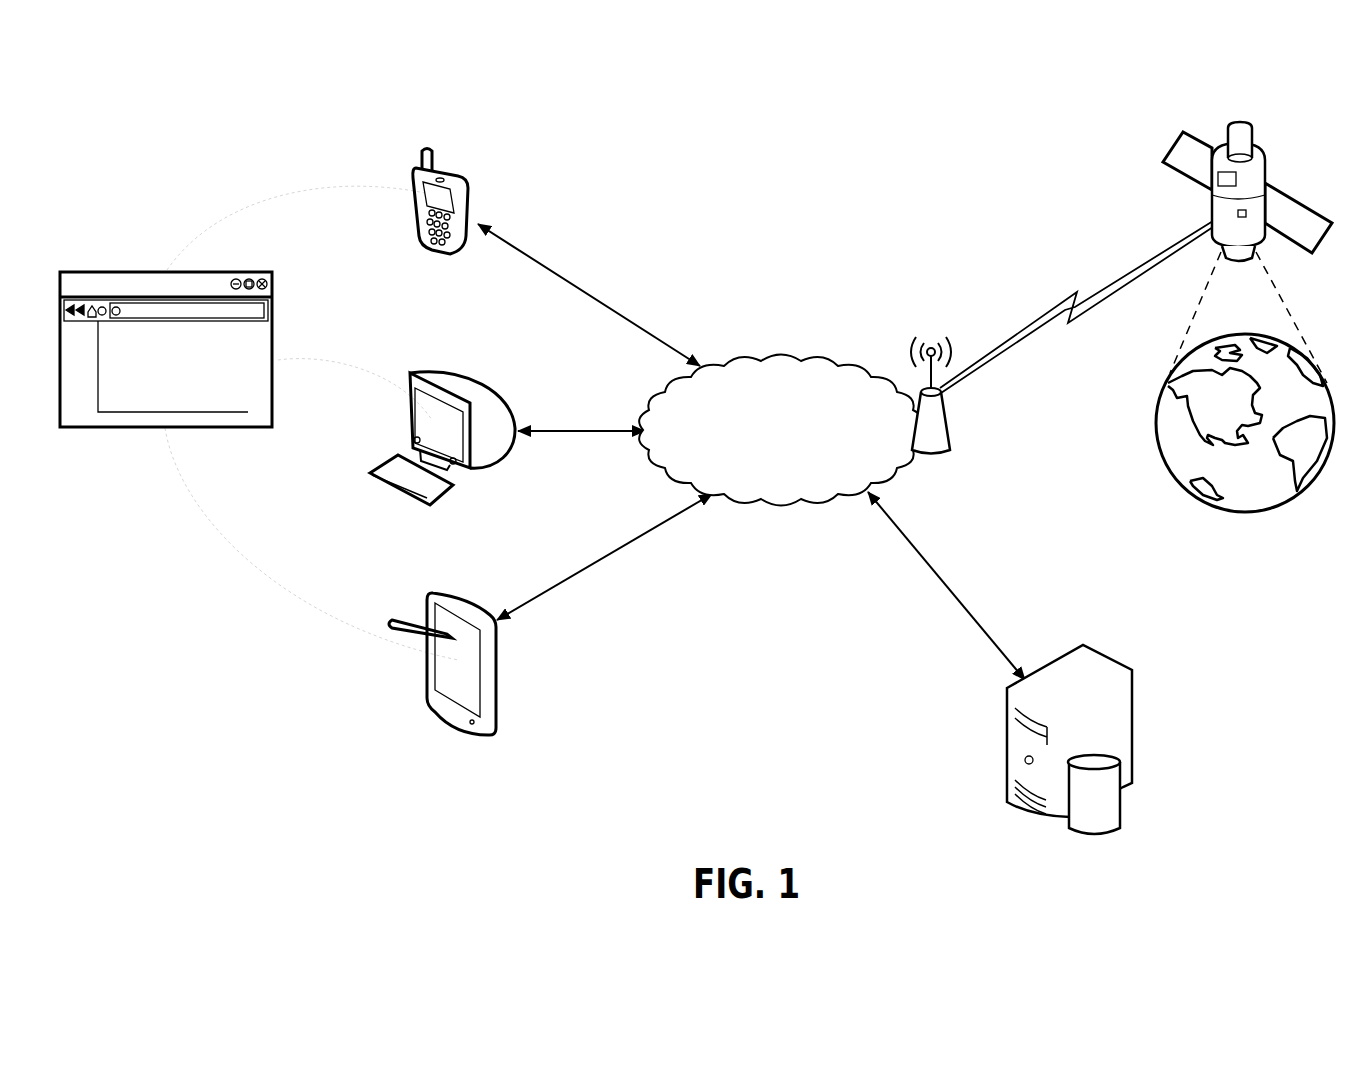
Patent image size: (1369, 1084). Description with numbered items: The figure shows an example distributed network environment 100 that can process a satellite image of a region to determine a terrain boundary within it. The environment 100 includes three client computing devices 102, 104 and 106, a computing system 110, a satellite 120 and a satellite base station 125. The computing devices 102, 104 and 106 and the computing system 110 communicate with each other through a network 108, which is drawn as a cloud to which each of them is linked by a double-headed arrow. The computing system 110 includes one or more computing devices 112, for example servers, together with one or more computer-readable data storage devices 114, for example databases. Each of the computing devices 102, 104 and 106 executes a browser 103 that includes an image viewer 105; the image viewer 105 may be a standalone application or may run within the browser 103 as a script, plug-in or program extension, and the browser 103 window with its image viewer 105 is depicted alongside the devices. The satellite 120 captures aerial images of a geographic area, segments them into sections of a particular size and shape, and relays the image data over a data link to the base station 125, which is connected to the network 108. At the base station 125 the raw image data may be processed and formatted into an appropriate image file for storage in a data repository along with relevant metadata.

The network environment 100 is at (906, 143).
The computing device 102 is at (458, 172).
The browser 103 is at (166, 349).
The computing device 104 is at (460, 376).
The image viewer 105 is at (173, 366).
The computing device 106 is at (488, 733).
The network 108 is at (781, 430).
The computing system 110 is at (1192, 728).
The computing device 112 is at (1112, 660).
The computer-readable data storage device 114 is at (1098, 836).
The satellite 120 is at (1247, 124).
The satellite base station 125 is at (940, 452).